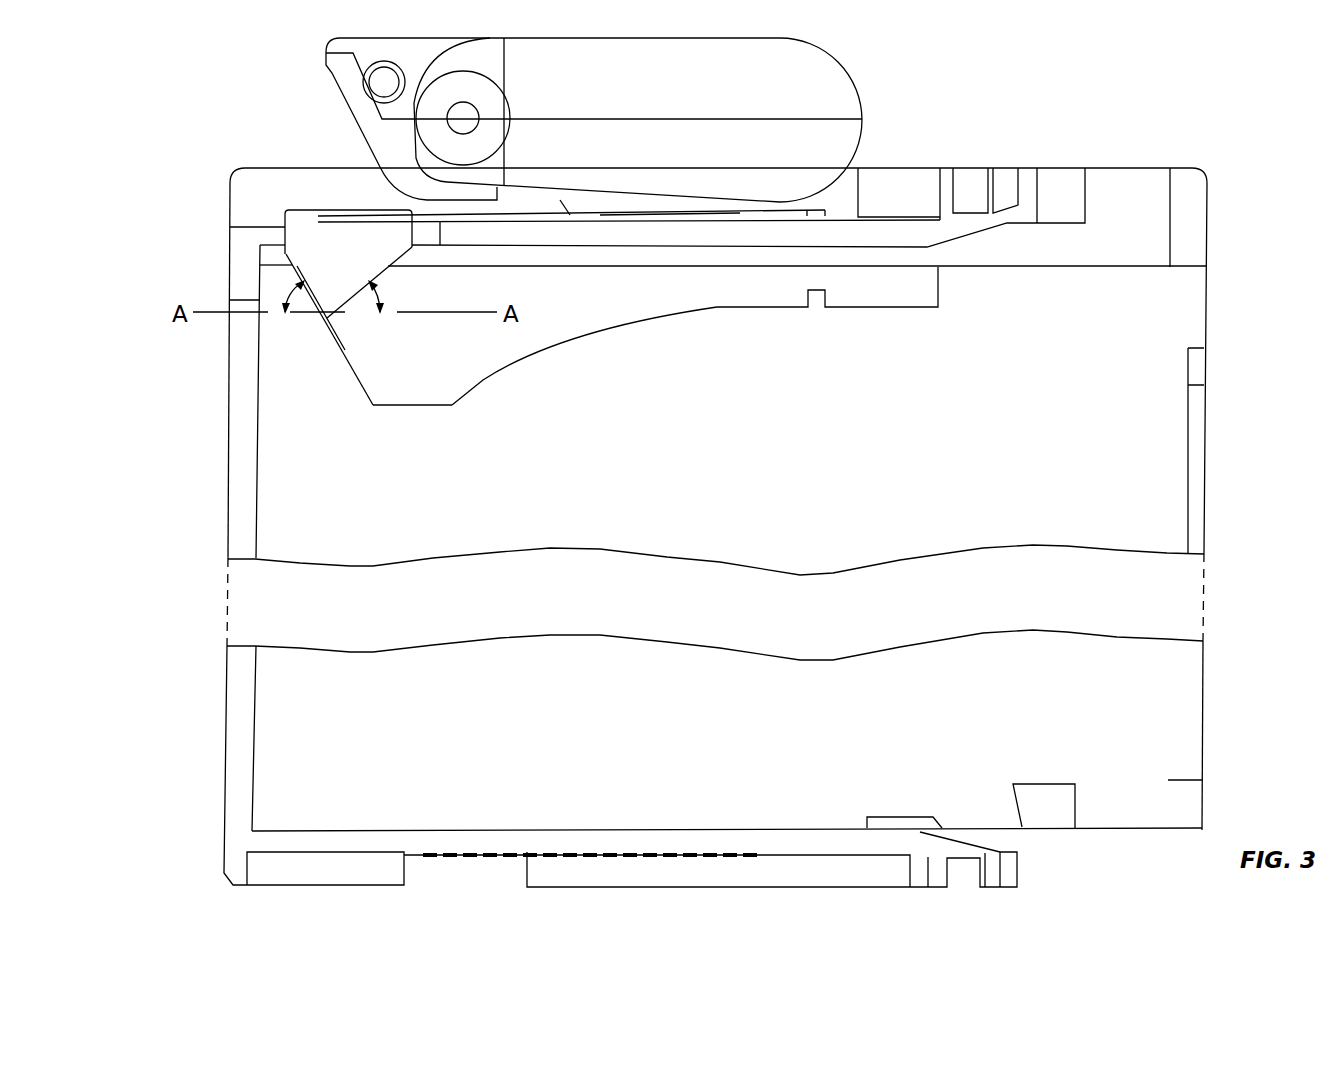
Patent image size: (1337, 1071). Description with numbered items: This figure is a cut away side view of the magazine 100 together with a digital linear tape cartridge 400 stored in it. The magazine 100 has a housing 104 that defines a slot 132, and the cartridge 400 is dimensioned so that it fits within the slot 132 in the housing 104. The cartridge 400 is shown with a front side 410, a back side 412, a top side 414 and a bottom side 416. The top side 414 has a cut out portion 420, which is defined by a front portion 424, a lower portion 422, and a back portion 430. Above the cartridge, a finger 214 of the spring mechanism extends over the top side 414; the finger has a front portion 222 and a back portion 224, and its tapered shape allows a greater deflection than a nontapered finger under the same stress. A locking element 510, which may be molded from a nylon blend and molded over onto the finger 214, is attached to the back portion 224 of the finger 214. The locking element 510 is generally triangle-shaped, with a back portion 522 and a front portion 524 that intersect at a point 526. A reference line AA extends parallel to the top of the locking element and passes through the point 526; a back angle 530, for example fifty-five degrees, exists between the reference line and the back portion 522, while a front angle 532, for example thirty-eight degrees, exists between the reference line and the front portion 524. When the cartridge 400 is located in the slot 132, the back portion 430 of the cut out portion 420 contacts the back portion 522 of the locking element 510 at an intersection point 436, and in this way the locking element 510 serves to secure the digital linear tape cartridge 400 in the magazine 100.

The magazine 100 is at (1082, 101).
The housing 104 is at (226, 697).
The slot 132 is at (1232, 272).
The finger 214 is at (662, 212).
The front portion 222 is at (787, 212).
The back portion 224 is at (343, 216).
The digital linear tape cartridge 400 is at (1206, 305).
The front side 410 is at (1205, 452).
The back side 412 is at (260, 498).
The top side 414 is at (1005, 267).
The bottom side 416 is at (713, 828).
The cut out portion 420 is at (567, 310).
The lower portion 422 is at (412, 405).
The front portion 424 is at (717, 307).
The back portion 430 is at (366, 383).
The intersection point 436 is at (290, 275).
The locking element 510 is at (285, 235).
The back portion 522 is at (290, 285).
The front portion 524 is at (383, 272).
The point 526 is at (344, 340).
The back angle 530 is at (300, 293).
The front angle 532 is at (378, 293).